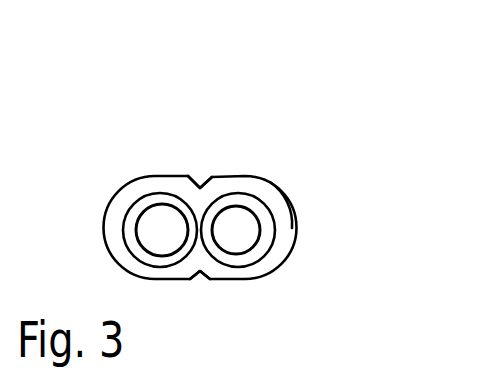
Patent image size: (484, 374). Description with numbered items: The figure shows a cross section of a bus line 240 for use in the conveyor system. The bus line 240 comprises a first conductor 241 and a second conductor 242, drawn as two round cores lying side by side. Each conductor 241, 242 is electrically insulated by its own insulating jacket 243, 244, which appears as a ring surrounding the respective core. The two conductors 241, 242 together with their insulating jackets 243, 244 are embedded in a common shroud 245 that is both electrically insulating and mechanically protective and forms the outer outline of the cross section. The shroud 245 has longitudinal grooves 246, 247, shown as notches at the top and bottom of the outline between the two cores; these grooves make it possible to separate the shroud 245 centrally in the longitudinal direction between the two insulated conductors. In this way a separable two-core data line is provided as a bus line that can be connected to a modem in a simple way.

The bus line 240 is at (312, 104).
The first conductor 241 is at (233, 222).
The second conductor 242 is at (153, 222).
The insulating jacket 243 is at (254, 203).
The insulating jacket 244 is at (162, 198).
The shroud 245 is at (282, 218).
The longitudinal groove 246 is at (200, 289).
The longitudinal groove 247 is at (195, 166).